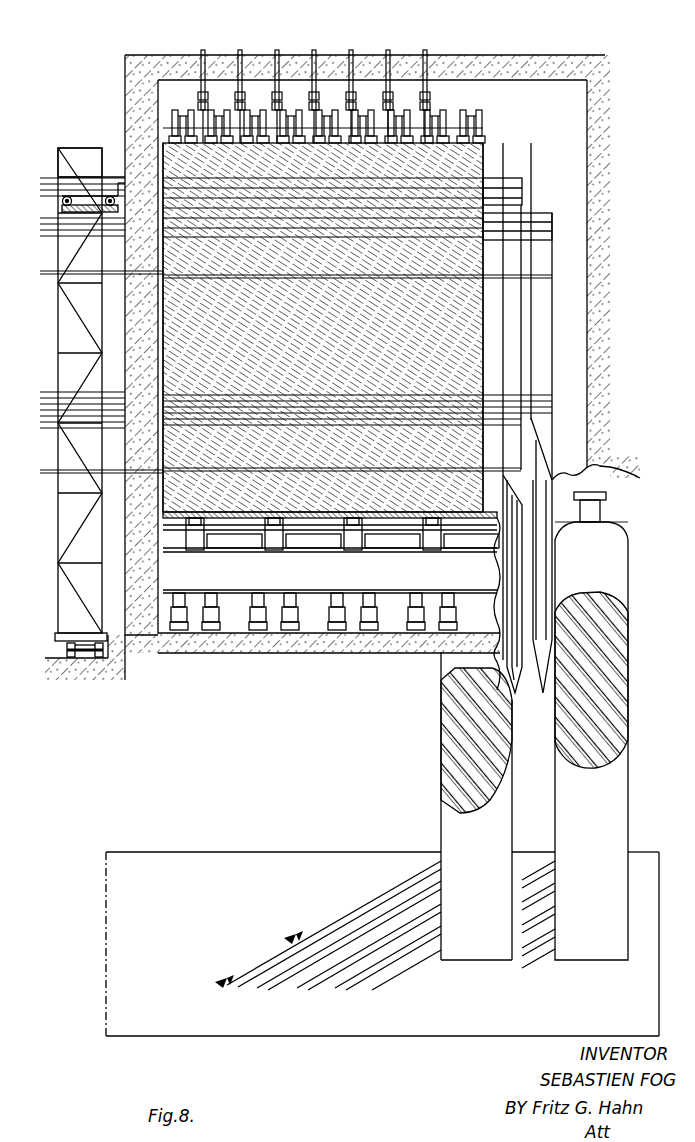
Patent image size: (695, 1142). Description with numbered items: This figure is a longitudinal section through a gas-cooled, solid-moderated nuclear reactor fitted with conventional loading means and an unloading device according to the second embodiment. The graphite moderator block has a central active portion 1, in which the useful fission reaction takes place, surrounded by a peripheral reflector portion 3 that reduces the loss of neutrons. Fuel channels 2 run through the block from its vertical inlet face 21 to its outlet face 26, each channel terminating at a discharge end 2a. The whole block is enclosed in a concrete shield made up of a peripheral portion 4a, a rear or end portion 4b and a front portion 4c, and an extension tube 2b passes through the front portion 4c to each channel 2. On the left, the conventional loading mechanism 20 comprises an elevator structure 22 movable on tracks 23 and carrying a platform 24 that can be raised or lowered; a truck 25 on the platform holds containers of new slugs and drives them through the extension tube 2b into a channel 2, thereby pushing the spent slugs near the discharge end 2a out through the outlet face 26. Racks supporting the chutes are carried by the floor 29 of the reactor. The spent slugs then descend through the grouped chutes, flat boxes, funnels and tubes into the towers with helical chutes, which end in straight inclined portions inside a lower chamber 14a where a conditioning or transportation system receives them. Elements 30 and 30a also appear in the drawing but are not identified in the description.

The central active portion 1 is at (483, 255).
The channel 2 is at (450, 185).
The discharge end 2a is at (484, 178).
The extension tube 2b is at (128, 177).
The peripheral reflector portion 3 is at (419, 140).
The peripheral portion 4a is at (463, 76).
The rear or end portion 4b is at (598, 100).
The front portion 4c is at (125, 83).
The lower chamber 14a is at (645, 873).
The loading mechanism 20 is at (58, 177).
The vertical inlet face 21 is at (163, 165).
The elevator structure 22 is at (58, 260).
The tracks 23 is at (96, 660).
The platform 24 is at (45, 207).
The truck 25 is at (90, 183).
The outlet face 26 is at (484, 316).
The floor 29 is at (233, 655).
The wall insulation 30 is at (572, 278).
The support structure 30a is at (163, 367).